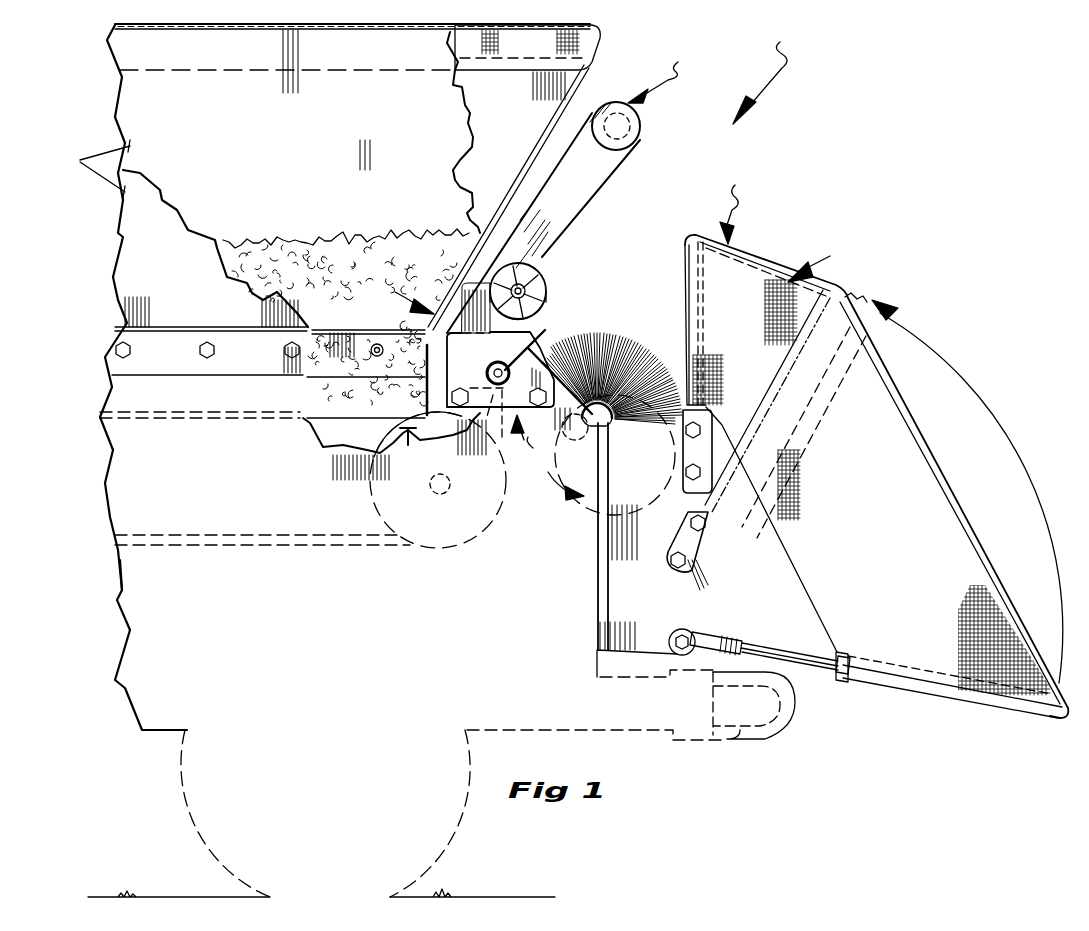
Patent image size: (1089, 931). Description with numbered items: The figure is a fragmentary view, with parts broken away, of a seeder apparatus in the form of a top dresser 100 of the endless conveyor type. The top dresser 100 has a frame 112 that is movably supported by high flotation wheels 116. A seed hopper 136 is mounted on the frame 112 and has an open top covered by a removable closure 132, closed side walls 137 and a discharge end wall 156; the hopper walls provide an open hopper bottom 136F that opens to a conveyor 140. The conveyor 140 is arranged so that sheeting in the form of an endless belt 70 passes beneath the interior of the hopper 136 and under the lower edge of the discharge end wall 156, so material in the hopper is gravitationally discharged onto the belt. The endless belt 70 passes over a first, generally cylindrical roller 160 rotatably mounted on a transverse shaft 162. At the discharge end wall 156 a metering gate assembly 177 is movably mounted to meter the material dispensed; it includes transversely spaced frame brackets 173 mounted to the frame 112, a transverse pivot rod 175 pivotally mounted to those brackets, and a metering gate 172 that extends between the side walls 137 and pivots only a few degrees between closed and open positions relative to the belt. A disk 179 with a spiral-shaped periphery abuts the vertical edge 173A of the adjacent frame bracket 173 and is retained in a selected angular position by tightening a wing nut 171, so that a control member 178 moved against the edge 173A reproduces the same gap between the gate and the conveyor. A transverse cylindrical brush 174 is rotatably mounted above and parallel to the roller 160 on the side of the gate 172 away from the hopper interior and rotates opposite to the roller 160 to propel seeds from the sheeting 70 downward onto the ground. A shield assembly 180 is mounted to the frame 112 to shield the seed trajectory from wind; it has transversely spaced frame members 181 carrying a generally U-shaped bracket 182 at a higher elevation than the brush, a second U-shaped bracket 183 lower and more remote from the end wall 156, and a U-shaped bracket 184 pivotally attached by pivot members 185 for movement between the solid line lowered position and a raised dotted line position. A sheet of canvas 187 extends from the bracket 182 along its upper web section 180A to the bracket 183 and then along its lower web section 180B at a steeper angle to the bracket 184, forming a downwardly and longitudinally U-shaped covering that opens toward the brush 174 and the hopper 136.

The top dresser 100 is at (633, 380).
The endless belt 70 is at (352, 430).
The frame 112 is at (138, 580).
The high flotation wheels 116 is at (190, 806).
The removable closure 132 is at (603, 46).
The seed hopper 136 is at (92, 231).
The open hopper bottom 136F is at (310, 393).
The closed side walls 137 is at (84, 169).
The conveyor 140 is at (406, 460).
The discharge end wall 156 is at (560, 108).
The first cylindrical roller 160 is at (360, 452).
The transverse shaft 162 is at (442, 495).
The wing nut 171 is at (528, 270).
The metering gate 172 is at (393, 296).
The frame brackets 173 is at (593, 455).
The vertical edge 173A is at (553, 316).
The transverse cylindrical brush 174 is at (624, 368).
The transverse pivot rod 175 is at (546, 332).
The metering gate assembly 177 is at (674, 73).
The control member 178 is at (640, 124).
The disk 179 is at (548, 288).
The shield assembly 180 is at (876, 439).
The upper web section 180A is at (786, 264).
The lower web section 180B is at (909, 654).
The frame members 181 is at (597, 598).
The U-shaped bracket 182 is at (683, 480).
The second U-shaped bracket 183 is at (672, 555).
The U-shaped bracket 184 is at (735, 552).
The pivot members 185 is at (690, 637).
The sheet of canvas 187 is at (950, 488).